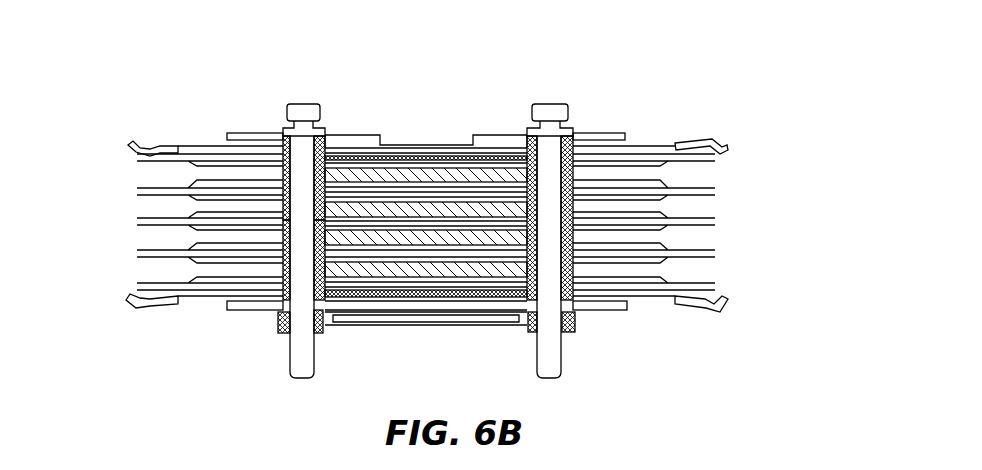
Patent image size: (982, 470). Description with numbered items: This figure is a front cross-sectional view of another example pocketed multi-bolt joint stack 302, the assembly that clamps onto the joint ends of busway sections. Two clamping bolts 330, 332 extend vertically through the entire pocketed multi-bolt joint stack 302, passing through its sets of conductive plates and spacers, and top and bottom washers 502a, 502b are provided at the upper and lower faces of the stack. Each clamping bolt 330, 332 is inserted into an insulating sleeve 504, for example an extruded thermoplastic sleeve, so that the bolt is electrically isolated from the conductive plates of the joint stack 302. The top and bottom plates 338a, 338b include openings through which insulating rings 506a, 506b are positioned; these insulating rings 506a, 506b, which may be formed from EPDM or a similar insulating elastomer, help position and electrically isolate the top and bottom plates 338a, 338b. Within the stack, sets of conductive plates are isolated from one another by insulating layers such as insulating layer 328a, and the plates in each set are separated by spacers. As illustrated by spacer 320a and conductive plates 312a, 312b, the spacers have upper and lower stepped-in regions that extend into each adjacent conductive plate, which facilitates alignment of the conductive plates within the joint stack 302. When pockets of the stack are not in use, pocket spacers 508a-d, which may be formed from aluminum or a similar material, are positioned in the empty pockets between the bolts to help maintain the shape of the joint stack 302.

The pocketed multi-bolt joint stack 302 is at (670, 88).
The clamping bolt 330 is at (303, 104).
The clamping bolt 332 is at (545, 106).
The top washer 502a is at (349, 137).
The bottom washer 502b is at (243, 305).
The insulating sleeve 504 is at (317, 293).
The insulating ring 506a is at (285, 148).
The insulating ring 506b is at (283, 297).
The pocket spacers 508a-d is at (477, 272).
The spacer 320a is at (283, 170).
The top plate 338a is at (693, 137).
The bottom plate 338b is at (693, 305).
The insulating layer 328a is at (713, 157).
The conductive plate 312a is at (662, 163).
The conductive plate 312b is at (662, 182).